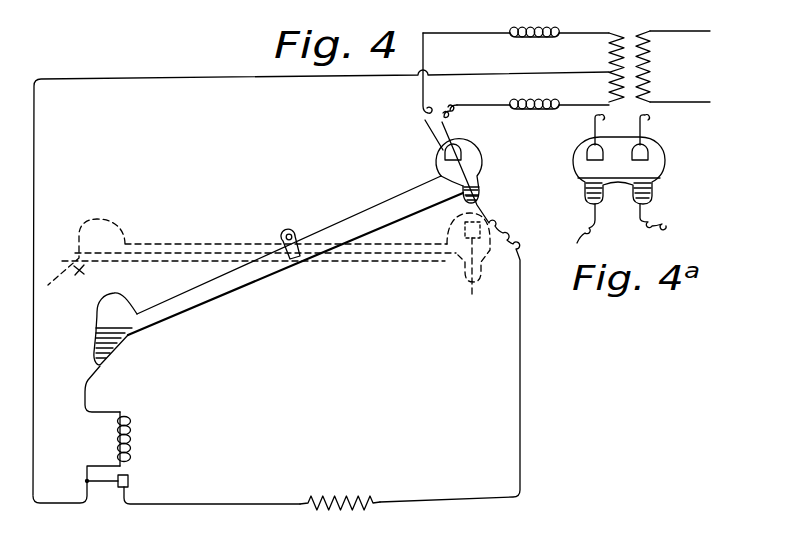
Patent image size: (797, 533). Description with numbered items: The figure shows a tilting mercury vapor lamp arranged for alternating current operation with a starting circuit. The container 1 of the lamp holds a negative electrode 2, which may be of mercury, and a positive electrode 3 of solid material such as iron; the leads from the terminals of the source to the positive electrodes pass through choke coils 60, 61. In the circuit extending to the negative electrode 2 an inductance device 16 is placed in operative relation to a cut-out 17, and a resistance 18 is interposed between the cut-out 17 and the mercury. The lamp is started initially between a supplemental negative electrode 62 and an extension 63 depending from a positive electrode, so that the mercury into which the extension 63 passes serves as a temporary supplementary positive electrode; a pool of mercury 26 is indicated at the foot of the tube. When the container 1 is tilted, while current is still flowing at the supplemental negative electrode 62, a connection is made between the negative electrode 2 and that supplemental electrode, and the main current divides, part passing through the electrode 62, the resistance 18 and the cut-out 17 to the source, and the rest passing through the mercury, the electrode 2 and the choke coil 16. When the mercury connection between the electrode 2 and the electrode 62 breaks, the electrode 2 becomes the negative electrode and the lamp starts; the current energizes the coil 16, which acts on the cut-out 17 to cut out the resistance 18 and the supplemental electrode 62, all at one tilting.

In FIG. 4, the container of the lamp 1 is at (253, 276).
In FIG. 4, the negative electrode 2 is at (116, 346).
In FIG. 4, the positive electrode 3 is at (461, 150).
In FIG. 4A, the positive electrode 3 is at (592, 153).
In FIG. 4, the inductance device 16 is at (131, 446).
In FIG. 4, the cut-out 17 is at (193, 488).
In FIG. 4, the resistance 18 is at (340, 491).
In FIG. 4, the mercury pool 26 is at (479, 190).
In FIG. 4, the choke coil 60 is at (535, 43).
In FIG. 4, the choke coil 61 is at (535, 115).
In FIG. 4, the supplemental negative electrode 62 is at (464, 197).
In FIG. 4, the extension 63 is at (448, 165).
In FIG. 4A, the extension 63 is at (641, 167).